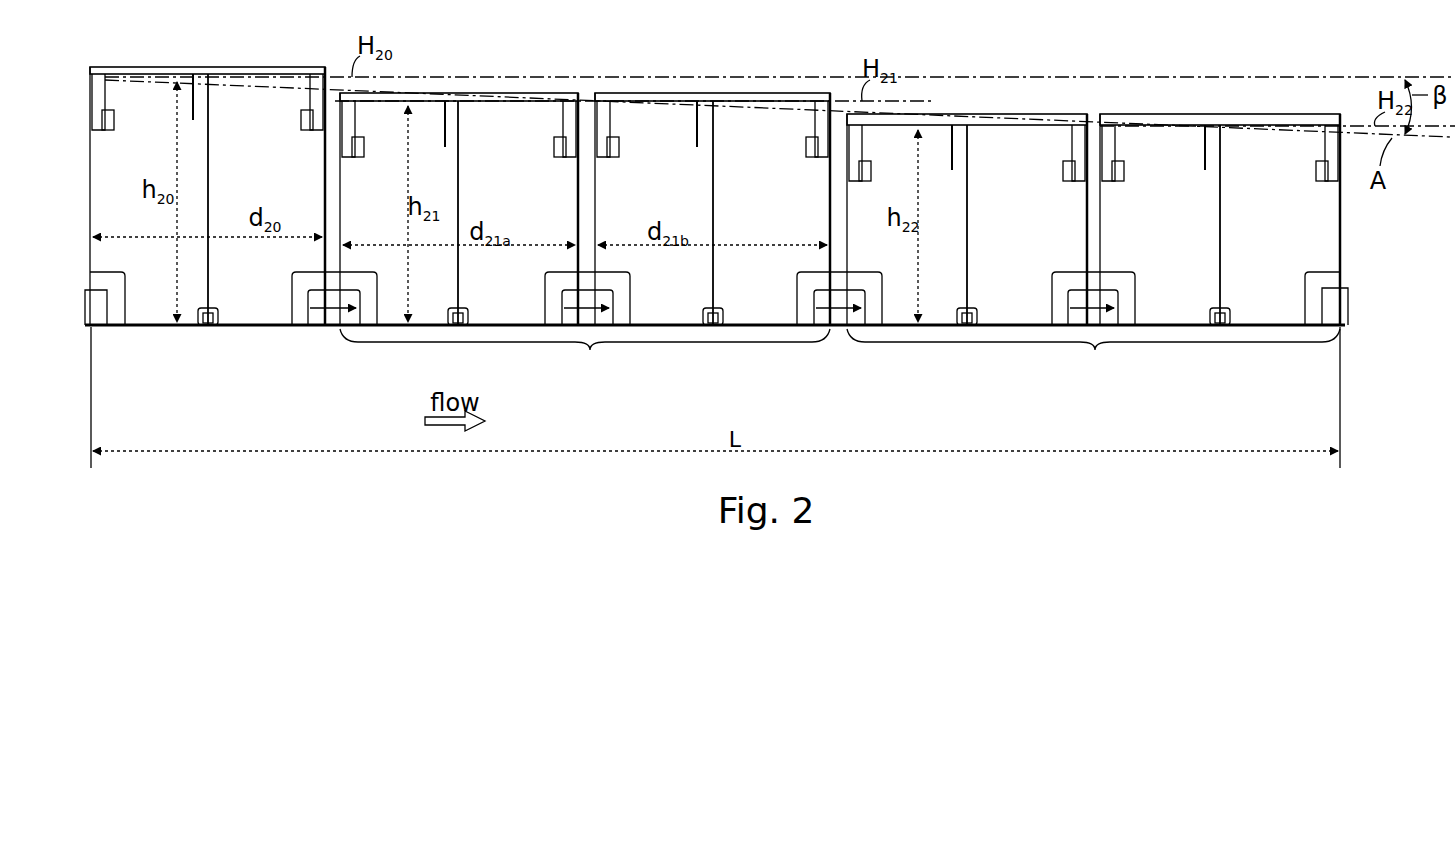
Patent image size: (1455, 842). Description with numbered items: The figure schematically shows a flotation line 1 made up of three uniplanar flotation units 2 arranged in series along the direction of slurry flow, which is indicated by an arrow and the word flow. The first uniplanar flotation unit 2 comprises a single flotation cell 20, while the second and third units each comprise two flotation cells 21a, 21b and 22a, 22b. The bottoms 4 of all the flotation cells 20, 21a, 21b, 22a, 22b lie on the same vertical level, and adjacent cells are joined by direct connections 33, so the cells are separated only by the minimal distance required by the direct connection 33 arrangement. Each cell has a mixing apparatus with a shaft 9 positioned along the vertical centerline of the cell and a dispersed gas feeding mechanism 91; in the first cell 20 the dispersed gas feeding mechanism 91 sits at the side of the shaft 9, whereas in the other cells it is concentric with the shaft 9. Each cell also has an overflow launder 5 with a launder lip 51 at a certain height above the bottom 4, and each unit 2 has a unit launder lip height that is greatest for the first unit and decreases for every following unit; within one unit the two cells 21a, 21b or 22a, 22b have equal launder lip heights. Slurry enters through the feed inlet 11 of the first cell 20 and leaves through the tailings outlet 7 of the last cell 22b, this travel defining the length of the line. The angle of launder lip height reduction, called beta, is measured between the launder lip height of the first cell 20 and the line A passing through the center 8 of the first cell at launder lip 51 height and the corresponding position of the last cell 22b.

The flotation line 1 is at (697, 28).
The uniplanar flotation unit 2 is at (193, 352).
The bottom 4 is at (281, 327).
The overflow launder 5 is at (326, 68).
The tailings outlet 7 is at (1350, 312).
The center 8 is at (210, 67).
The shaft 9 is at (200, 72).
The feed inlet 11 is at (97, 322).
The flotation cell 20 is at (206, 196).
The flotation cell 21a is at (459, 209).
The flotation cell 21b is at (712, 209).
The flotation cell 22a is at (967, 219).
The flotation cell 22b is at (1220, 219).
The direct connection 33 is at (338, 328).
The launder lip 51 is at (258, 67).
The dispersed gas feeding mechanism 91 is at (212, 327).